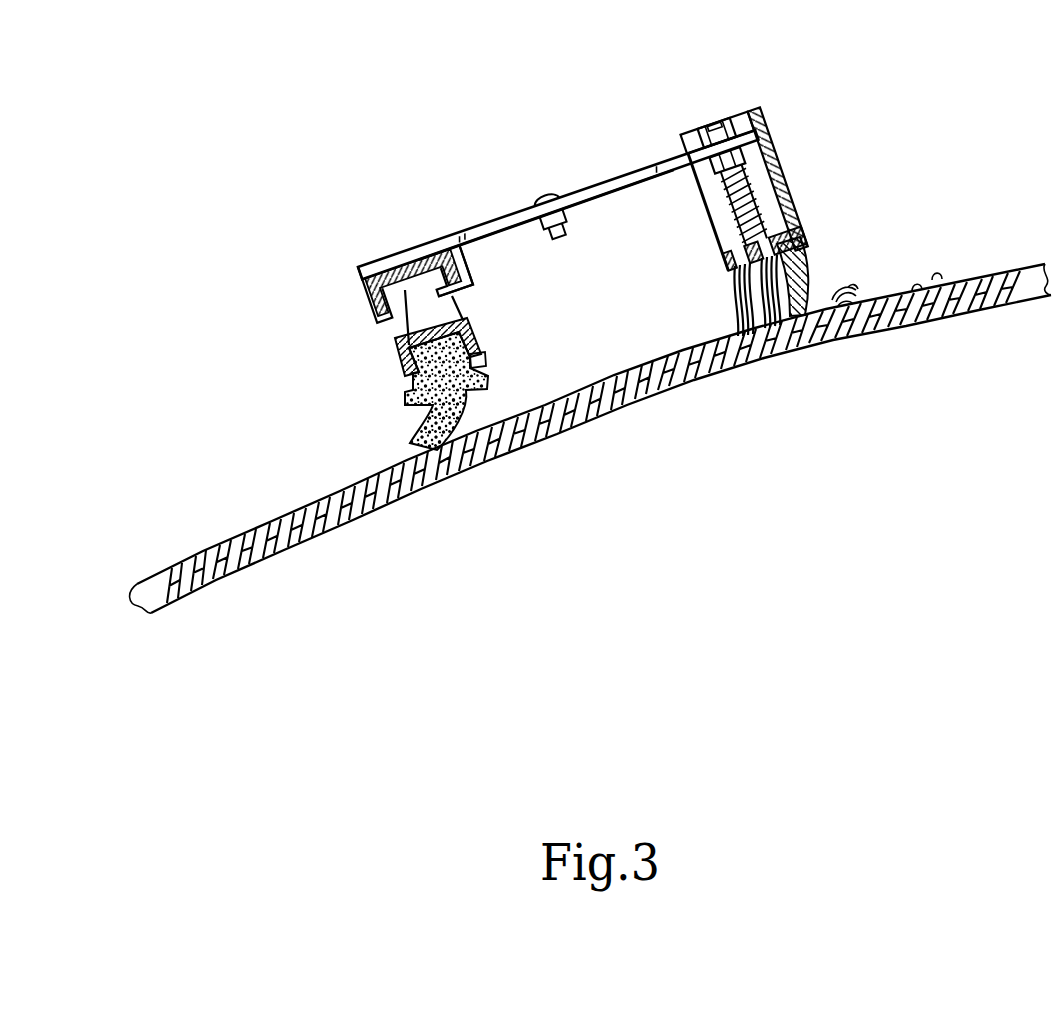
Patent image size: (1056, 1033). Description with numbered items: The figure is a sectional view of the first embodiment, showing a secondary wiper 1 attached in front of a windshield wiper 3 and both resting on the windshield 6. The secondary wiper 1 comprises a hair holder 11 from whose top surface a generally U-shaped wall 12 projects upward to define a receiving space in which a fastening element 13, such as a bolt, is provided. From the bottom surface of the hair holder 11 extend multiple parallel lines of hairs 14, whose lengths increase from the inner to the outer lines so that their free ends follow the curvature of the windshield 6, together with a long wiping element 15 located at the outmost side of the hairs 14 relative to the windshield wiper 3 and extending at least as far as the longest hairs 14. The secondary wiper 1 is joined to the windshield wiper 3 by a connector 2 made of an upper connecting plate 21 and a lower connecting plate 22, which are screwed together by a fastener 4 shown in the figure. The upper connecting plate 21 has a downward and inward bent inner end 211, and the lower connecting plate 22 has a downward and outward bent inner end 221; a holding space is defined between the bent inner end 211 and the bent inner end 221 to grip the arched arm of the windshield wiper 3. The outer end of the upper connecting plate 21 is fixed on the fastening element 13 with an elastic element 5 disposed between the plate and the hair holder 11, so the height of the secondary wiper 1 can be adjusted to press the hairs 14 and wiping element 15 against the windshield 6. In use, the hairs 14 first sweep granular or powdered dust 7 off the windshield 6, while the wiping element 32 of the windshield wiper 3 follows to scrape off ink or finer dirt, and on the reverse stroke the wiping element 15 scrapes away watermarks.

The secondary wiper 1 is at (802, 164).
The hair holder 11 is at (732, 270).
The U-shaped wall 12 is at (770, 122).
The fastening element 13 is at (716, 128).
The hairs 14 is at (745, 312).
The wiping element 15 is at (808, 277).
The connector 2 is at (489, 204).
The upper connecting plate 21 is at (424, 250).
The bent inner end 211 is at (370, 287).
The lower connecting plate 22 is at (520, 222).
The bent inner end 221 is at (465, 287).
The windshield wiper 3 is at (393, 372).
The wiping element 32 is at (418, 410).
The fastener 4 is at (548, 193).
The elastic element 5 is at (717, 224).
The windshield 6 is at (1014, 270).
The dust 7 is at (917, 282).